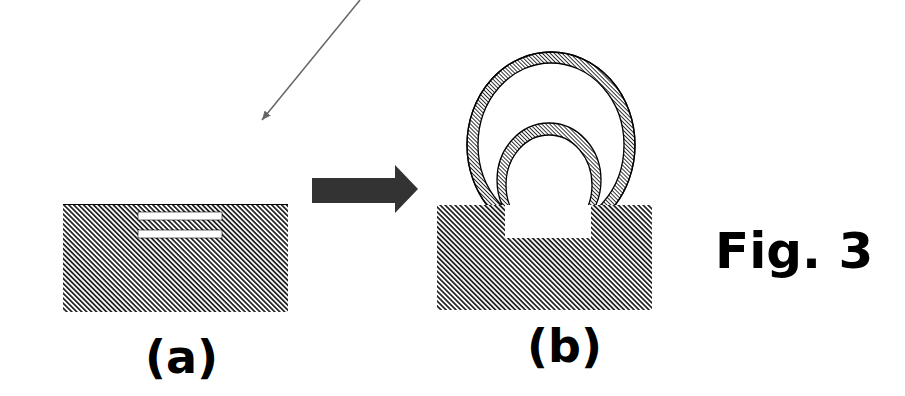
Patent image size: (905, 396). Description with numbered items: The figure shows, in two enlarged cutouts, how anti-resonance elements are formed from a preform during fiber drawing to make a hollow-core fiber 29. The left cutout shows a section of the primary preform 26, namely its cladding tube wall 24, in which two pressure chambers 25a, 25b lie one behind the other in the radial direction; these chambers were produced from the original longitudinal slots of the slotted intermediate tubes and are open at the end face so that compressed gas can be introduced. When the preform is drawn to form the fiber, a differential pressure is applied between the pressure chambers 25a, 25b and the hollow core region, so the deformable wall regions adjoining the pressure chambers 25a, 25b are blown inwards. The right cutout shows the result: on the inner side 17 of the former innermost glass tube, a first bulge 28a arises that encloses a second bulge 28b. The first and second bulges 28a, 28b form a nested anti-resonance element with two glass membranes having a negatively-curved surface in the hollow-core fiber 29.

The cladding tube wall 24 is at (103, 293).
The primary preform 26 is at (120, 188).
The front pressure chamber 25a is at (163, 212).
The rear pressure chamber 25b is at (180, 233).
The inner side 17 is at (518, 201).
The first bulge 28a is at (598, 73).
The second bulge 28b is at (583, 140).
The hollow-core fiber 29 is at (472, 102).